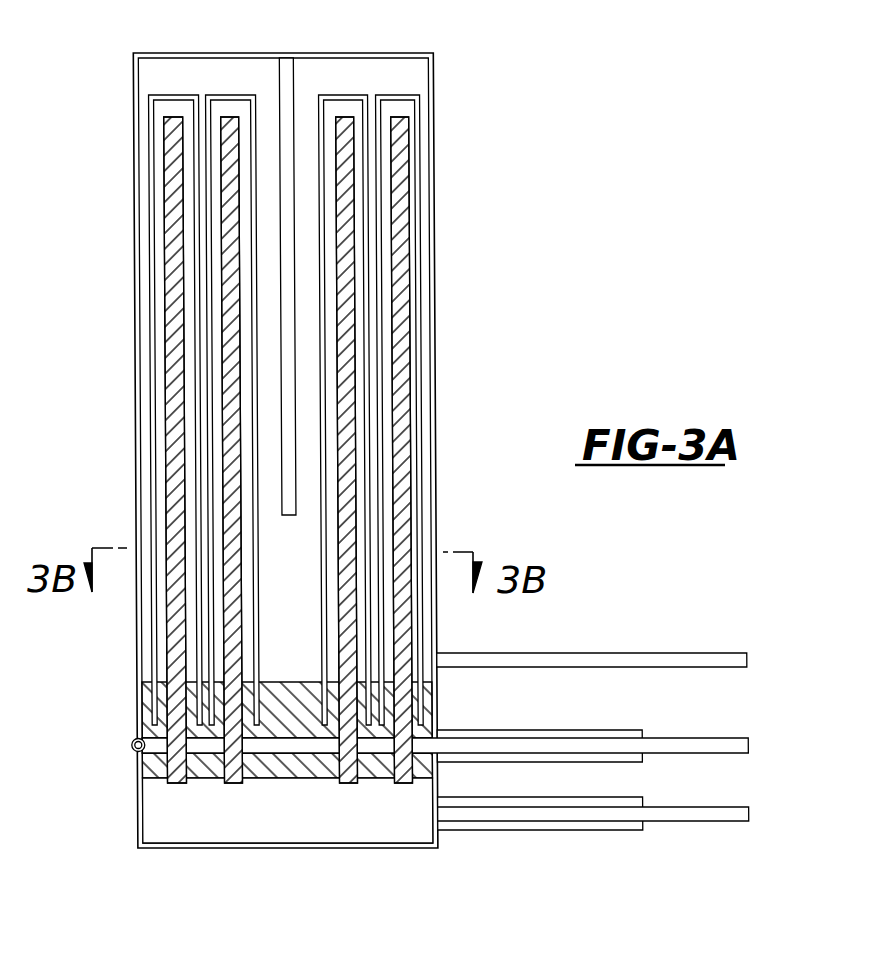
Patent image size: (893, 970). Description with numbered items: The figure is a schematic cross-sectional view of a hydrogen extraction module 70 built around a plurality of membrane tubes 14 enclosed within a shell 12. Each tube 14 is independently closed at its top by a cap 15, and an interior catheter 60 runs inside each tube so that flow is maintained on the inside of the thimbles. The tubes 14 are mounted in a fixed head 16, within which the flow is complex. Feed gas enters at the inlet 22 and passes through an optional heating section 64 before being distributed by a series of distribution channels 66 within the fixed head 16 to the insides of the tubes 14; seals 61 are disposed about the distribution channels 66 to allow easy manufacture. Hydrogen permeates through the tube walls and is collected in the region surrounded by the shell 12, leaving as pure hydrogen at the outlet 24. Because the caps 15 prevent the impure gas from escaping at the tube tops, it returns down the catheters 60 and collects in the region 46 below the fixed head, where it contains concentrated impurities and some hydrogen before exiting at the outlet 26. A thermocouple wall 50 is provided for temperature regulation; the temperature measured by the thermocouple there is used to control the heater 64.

The hydrogen extraction module 70 is at (642, 270).
The shell 12 is at (435, 333).
The tubes 14 is at (420, 152).
The cap 15 is at (405, 92).
The fixed head 16 is at (143, 718).
The region below the fixed head 46 is at (173, 832).
The thermocouple wall 50 is at (296, 92).
The interior catheters 60 is at (402, 238).
The seals 61 is at (131, 745).
The heating section 64 is at (625, 730).
The distribution channels 66 is at (297, 748).
The inlet 22 is at (725, 738).
The outlet 24 is at (723, 652).
The outlet 26 is at (700, 822).